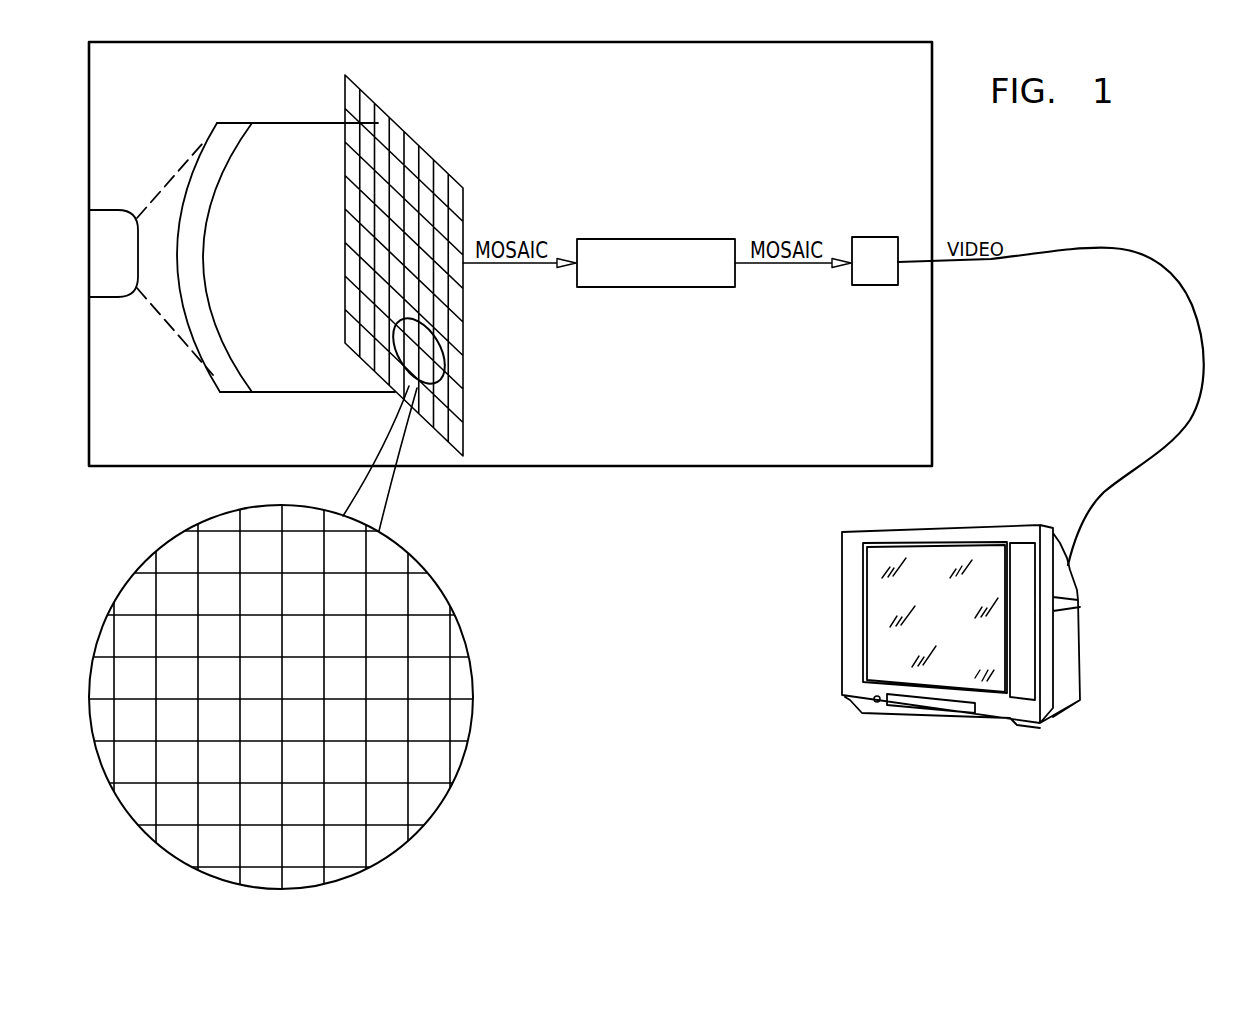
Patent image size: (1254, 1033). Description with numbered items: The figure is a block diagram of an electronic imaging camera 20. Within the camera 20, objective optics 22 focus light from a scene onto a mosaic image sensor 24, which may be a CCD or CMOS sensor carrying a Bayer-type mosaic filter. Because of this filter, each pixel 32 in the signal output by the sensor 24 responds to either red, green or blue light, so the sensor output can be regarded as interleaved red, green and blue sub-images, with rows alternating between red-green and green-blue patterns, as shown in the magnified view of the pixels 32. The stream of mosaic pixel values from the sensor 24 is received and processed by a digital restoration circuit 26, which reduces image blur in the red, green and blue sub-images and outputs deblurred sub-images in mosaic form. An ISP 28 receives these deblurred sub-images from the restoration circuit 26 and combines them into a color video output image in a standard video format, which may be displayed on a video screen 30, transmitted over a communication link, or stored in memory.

The electronic imaging camera 20 is at (810, 41).
The objective optics 22 is at (257, 121).
The mosaic image sensor 24 is at (417, 144).
The digital restoration circuit 26 is at (673, 239).
The ISP 28 is at (878, 238).
The video screen 30 is at (1023, 532).
The pixel 32 is at (444, 752).